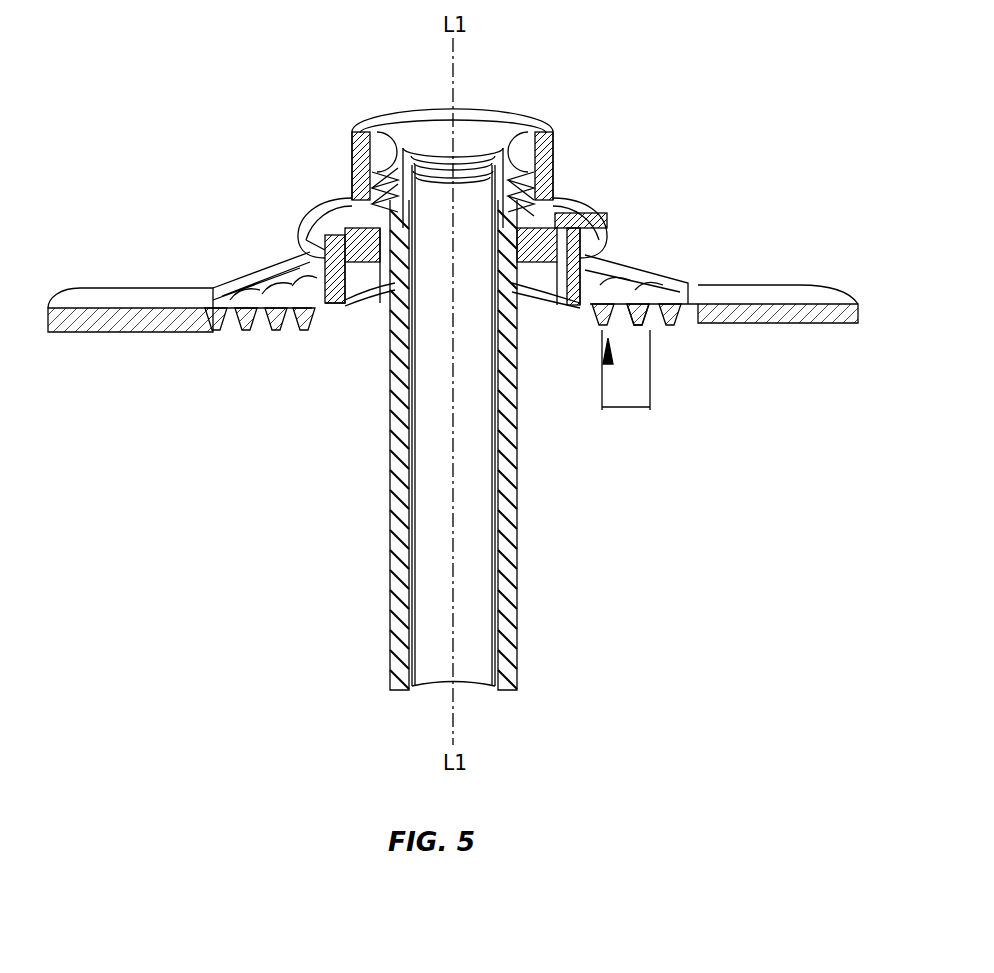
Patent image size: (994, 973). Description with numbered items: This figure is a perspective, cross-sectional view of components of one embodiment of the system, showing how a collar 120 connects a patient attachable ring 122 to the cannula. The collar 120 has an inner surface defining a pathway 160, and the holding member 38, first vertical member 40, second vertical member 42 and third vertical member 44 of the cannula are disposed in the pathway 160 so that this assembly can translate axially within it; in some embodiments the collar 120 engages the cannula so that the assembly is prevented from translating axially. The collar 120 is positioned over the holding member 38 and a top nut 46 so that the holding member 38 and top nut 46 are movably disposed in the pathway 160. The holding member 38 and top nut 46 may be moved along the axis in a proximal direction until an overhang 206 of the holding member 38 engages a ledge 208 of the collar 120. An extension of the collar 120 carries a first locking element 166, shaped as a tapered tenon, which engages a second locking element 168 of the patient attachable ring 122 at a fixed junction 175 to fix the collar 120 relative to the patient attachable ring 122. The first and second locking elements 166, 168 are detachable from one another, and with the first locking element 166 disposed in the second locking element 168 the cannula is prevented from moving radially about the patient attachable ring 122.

The top nut 46 is at (508, 110).
The holding member 38 is at (555, 172).
The ledge 208 is at (342, 214).
The collar 120 is at (330, 210).
The overhang 206 is at (302, 232).
The pathway 160 is at (362, 292).
The patient attachable ring 122 is at (766, 268).
The first locking element 166 is at (632, 330).
The second locking element 168 is at (602, 362).
The fixed junction 175 is at (625, 408).
The third vertical member 44 is at (390, 597).
The first vertical member 40 is at (518, 611).
The second vertical member 42 is at (466, 658).